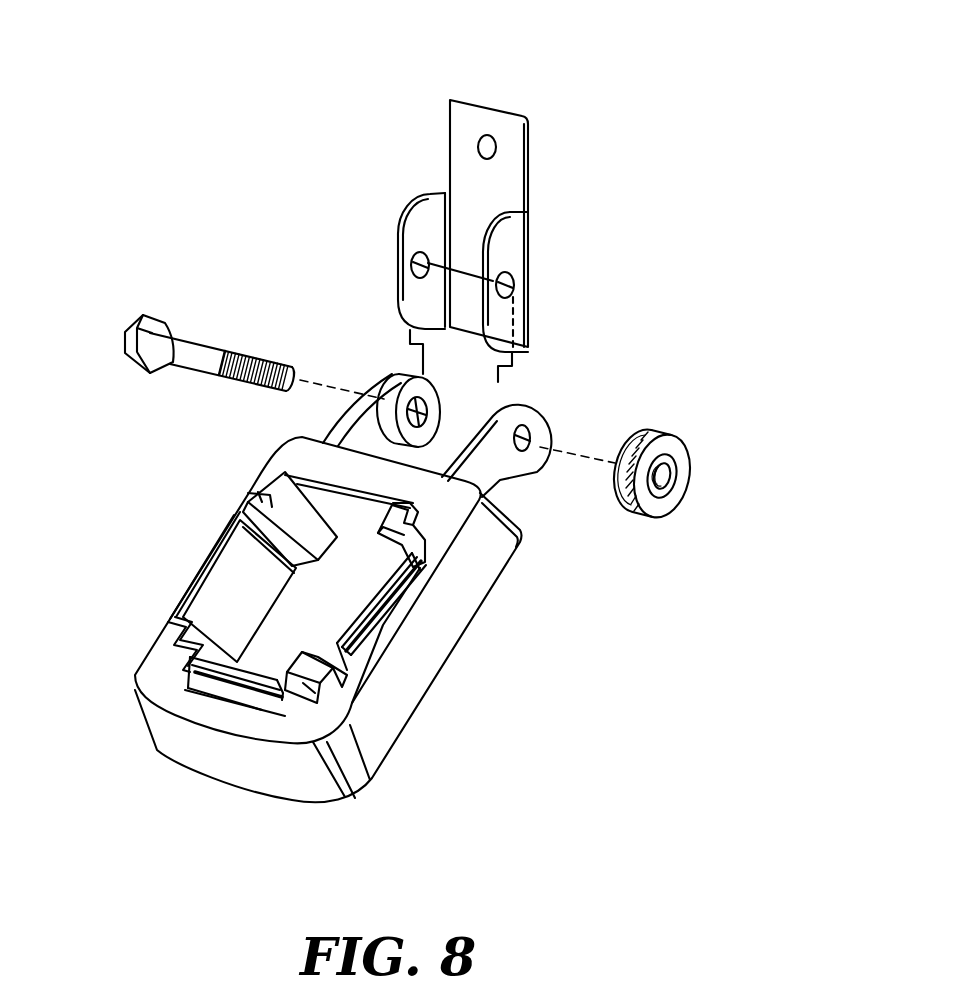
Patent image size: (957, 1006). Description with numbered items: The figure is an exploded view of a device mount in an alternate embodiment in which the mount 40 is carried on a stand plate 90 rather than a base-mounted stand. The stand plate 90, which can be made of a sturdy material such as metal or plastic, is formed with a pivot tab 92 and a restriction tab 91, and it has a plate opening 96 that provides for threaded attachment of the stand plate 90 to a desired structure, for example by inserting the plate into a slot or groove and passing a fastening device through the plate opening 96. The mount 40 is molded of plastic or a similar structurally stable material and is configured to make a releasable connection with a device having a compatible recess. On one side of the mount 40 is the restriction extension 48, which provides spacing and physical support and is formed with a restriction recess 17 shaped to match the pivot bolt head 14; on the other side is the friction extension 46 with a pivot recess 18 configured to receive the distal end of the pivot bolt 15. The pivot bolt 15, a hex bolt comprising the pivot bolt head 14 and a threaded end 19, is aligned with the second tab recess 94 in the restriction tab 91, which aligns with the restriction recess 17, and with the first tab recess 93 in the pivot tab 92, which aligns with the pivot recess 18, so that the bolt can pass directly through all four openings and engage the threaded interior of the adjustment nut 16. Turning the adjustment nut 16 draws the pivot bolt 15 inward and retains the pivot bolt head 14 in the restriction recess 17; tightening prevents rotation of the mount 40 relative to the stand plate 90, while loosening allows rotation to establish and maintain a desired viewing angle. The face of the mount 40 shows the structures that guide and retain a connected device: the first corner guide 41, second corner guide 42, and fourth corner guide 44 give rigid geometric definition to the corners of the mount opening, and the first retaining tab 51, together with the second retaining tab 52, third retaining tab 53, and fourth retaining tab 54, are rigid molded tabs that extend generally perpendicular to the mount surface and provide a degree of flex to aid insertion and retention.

The pivot bolt head 14 is at (141, 314).
The pivot bolt 15 is at (193, 347).
The threaded end 19 is at (252, 356).
The restriction recess 17 is at (404, 398).
The restriction extension 48 is at (408, 457).
The pivot recess 18 is at (532, 437).
The friction extension 46 is at (500, 476).
The adjustment nut 16 is at (688, 447).
The stand plate 90 is at (513, 190).
The restriction tab 91 is at (428, 216).
The second tab recess 94 is at (419, 256).
The pivot tab 92 is at (513, 242).
The first tab recess 93 is at (510, 283).
The plate opening 96 is at (487, 134).
The mount 40 is at (423, 680).
The second corner guide 42 is at (288, 495).
The second retaining tab 52 is at (260, 582).
The third retaining tab 53 is at (358, 510).
The fourth retaining tab 54 is at (388, 612).
The fourth corner guide 44 is at (305, 684).
The first retaining tab 51 is at (250, 697).
The first corner guide 41 is at (186, 620).